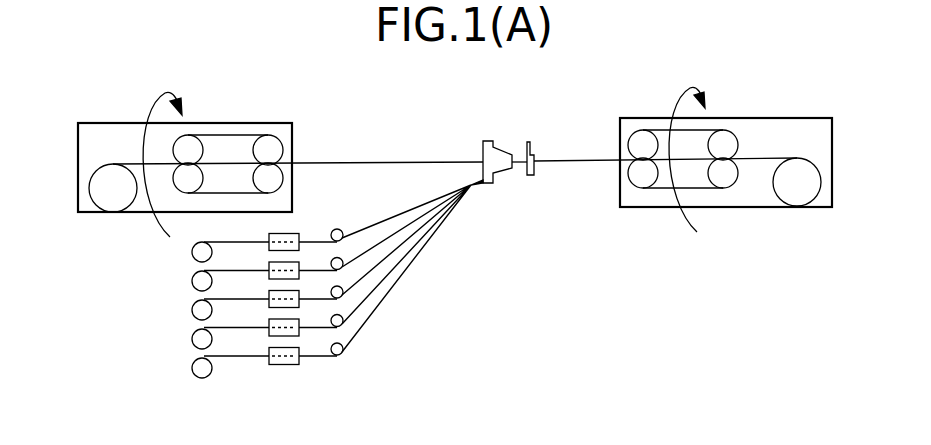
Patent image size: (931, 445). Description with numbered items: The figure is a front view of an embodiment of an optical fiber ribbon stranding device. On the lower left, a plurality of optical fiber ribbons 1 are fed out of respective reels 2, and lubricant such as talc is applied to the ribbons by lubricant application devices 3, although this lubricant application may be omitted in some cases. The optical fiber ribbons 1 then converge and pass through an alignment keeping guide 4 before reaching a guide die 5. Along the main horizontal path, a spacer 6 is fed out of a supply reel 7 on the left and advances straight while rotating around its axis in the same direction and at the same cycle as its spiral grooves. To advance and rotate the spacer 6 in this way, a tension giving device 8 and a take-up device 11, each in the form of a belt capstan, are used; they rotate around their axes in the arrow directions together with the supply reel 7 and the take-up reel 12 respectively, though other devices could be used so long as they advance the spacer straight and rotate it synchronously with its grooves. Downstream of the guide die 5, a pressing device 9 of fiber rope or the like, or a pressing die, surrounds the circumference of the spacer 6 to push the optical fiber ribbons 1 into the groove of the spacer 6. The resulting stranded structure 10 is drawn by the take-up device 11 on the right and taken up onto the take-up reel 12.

The optical fiber ribbons 1 is at (243, 329).
The reels 2 is at (188, 310).
The lubricant application devices 3 is at (300, 332).
The alignment keeping guide 4 is at (477, 178).
The guide die 5 is at (506, 147).
The spacer 6 is at (377, 162).
The supply reel 7 is at (113, 175).
The tension giving device 8 is at (228, 135).
The pressing device 9 is at (532, 150).
The stranded structure 10 is at (592, 159).
The take-up device 11 is at (707, 128).
The take-up reel 12 is at (797, 168).